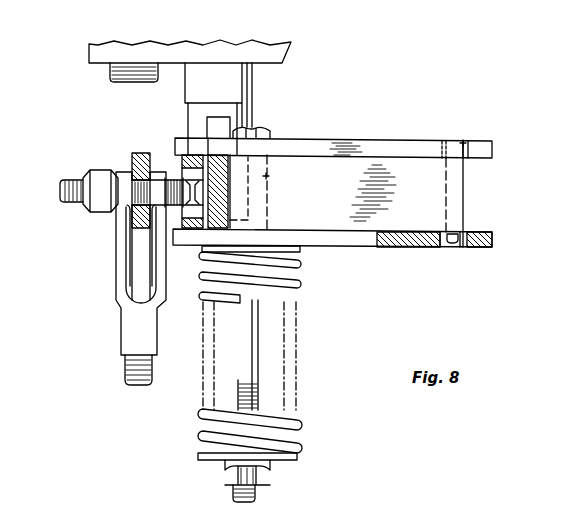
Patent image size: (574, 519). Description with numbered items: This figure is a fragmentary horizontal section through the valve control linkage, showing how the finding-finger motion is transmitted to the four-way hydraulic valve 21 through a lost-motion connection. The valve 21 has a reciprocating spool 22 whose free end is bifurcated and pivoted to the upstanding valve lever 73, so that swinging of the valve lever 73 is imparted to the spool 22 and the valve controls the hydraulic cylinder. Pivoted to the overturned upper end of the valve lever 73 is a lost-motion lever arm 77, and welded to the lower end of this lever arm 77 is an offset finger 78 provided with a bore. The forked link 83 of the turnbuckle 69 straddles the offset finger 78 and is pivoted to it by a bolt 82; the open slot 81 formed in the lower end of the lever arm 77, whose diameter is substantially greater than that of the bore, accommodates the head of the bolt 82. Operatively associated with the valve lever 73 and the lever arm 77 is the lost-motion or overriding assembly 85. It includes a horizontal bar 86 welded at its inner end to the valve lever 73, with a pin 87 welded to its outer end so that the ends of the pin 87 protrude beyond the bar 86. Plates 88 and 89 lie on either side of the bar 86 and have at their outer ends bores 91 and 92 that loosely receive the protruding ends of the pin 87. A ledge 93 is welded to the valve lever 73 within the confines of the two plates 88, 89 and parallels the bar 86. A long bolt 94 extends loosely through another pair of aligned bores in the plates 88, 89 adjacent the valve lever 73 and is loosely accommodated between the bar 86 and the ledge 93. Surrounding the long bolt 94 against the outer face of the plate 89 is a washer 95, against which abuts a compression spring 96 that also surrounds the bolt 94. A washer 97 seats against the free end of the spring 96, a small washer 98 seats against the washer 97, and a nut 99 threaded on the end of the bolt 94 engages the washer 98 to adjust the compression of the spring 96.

The four-way hydraulic valve 21 is at (173, 57).
The reciprocating spool 22 is at (252, 85).
The turnbuckle 69 is at (108, 365).
The valve lever 73 is at (215, 227).
The lost-motion lever arm 77 is at (183, 160).
The offset finger 78 is at (135, 158).
The open slot 81 is at (208, 191).
The bolt 82 is at (60, 190).
The forked link 83 is at (118, 254).
The lost-motion or overriding assembly 85 is at (387, 128).
The horizontal bar 86 is at (350, 201).
The pin 87 is at (452, 246).
The plate 88 is at (322, 147).
The plate 89 is at (363, 245).
The bore 91 is at (464, 143).
The bore 92 is at (462, 247).
The ledge 93 is at (266, 176).
The long bolt 94 is at (244, 346).
The washer 95 is at (297, 251).
The compression spring 96 is at (207, 295).
The washer 97 is at (205, 460).
The small washer 98 is at (268, 463).
The nut 99 is at (232, 477).